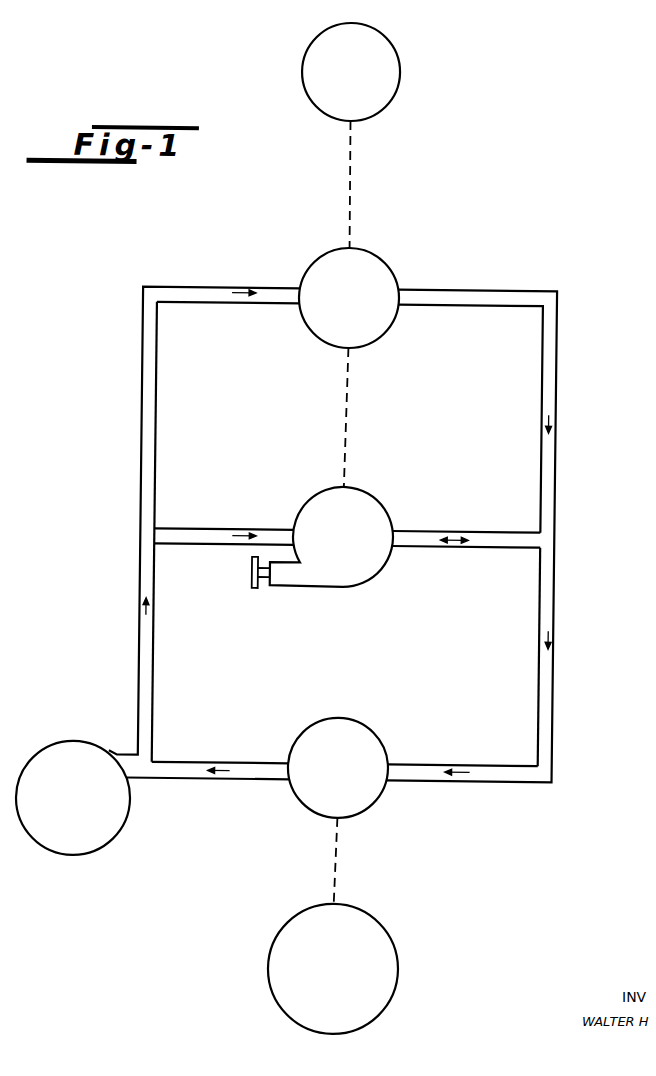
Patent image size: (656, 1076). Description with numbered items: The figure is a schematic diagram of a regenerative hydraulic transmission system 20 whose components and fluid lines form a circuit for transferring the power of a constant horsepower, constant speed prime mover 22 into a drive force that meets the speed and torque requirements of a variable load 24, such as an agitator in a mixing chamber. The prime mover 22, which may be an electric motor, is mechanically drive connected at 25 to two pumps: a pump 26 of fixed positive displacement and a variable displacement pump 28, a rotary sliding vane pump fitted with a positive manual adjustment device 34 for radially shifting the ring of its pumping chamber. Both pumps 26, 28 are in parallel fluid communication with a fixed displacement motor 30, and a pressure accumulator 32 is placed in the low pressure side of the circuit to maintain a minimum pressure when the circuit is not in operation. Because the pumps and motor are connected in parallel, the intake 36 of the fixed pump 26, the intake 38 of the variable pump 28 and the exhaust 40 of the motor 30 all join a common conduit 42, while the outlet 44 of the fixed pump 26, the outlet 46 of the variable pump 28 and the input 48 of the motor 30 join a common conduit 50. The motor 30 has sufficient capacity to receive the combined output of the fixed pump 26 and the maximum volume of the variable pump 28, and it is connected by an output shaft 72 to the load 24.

The regenerative hydraulic transmission system 20 is at (142, 272).
The prime mover 22 is at (388, 94).
The variable load 24 is at (390, 940).
The mechanical drive connection 25 is at (350, 180).
The fixed positive displacement pump 26 is at (385, 272).
The variable displacement pump 28 is at (377, 505).
The fixed displacement motor 30 is at (378, 740).
The pressure accumulator 32 is at (118, 833).
The manual adjustment device 34 is at (255, 579).
The intake of pump 26 36 is at (262, 304).
The intake of pump 28 38 is at (200, 547).
The exhaust of motor 30 40 is at (188, 764).
The common conduit 42 is at (142, 491).
The outlet of pump 26 44 is at (463, 303).
The outlet of pump 28 46 is at (481, 532).
The input of motor 30 48 is at (488, 763).
The common conduit 50 is at (551, 576).
The output shaft 72 is at (343, 855).